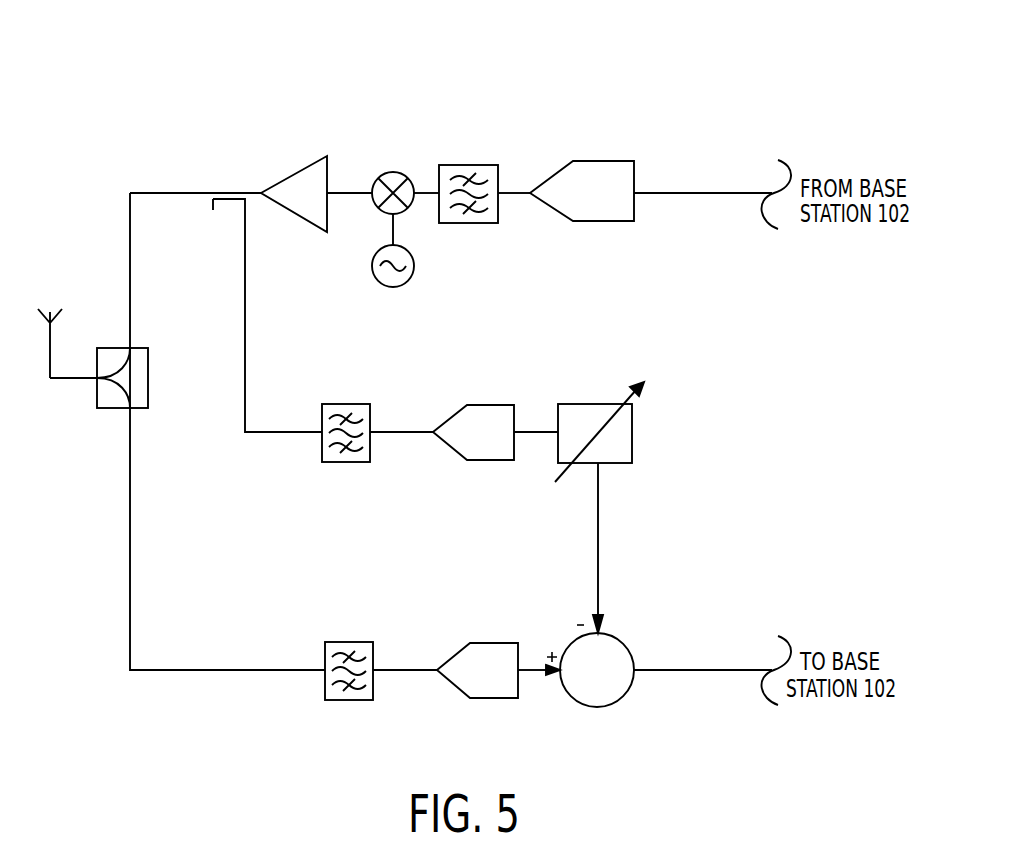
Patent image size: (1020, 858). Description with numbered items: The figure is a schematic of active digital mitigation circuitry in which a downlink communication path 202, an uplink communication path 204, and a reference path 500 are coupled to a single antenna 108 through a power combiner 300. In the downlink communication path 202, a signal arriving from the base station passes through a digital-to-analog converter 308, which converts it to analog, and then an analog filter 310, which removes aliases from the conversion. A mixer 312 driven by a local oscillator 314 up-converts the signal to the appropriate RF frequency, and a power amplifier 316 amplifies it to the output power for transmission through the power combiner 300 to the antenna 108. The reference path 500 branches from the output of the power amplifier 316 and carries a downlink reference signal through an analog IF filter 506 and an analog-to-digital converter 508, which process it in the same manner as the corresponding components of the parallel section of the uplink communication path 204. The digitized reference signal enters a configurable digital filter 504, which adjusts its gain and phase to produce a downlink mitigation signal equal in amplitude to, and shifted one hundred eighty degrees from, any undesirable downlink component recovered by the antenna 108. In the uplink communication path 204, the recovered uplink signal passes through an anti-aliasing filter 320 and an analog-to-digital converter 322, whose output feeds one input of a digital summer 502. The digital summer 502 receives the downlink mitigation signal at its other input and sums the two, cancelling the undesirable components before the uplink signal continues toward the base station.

The antenna 108 is at (44, 273).
The downlink communication path 202 is at (424, 76).
The uplink communication path 204 is at (284, 722).
The power combiner 300 is at (150, 380).
The digital-to-analog converter 308 is at (604, 161).
The analog filter 310 is at (470, 165).
The mixer 312 is at (393, 171).
The local oscillator 314 is at (414, 270).
The power amplifier 316 is at (290, 170).
The anti-aliasing filter 320 is at (348, 642).
The analog-to-digital converter 322 is at (495, 643).
The reference path 500 is at (212, 436).
The digital summer 502 is at (633, 648).
The configurable digital filter 504 is at (592, 404).
The analog IF filter 506 is at (350, 404).
The analog-to-digital converter 508 is at (488, 405).